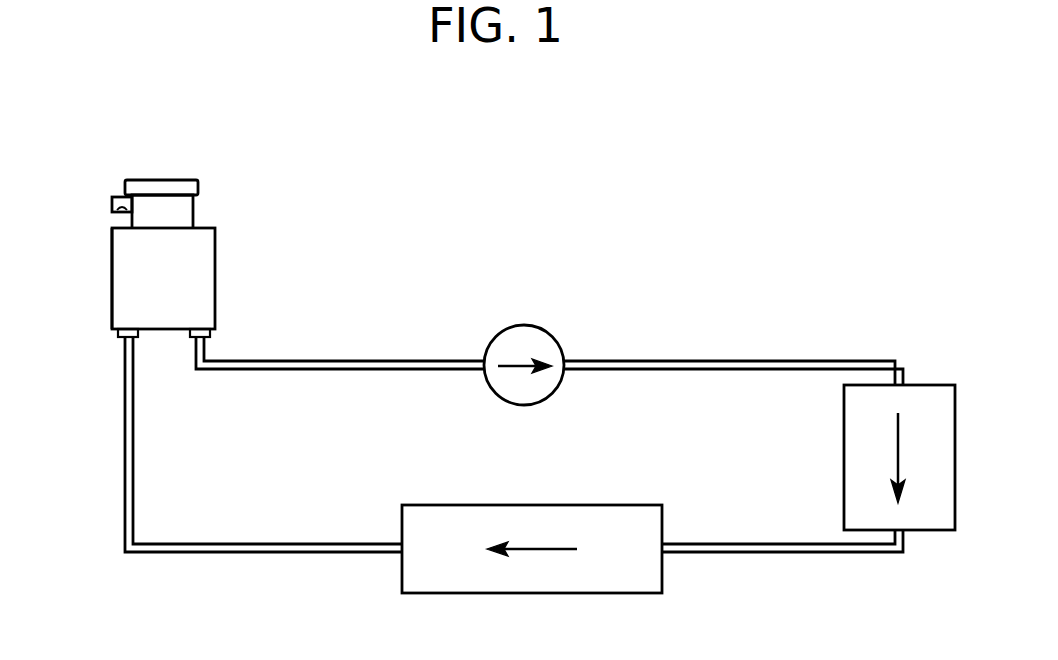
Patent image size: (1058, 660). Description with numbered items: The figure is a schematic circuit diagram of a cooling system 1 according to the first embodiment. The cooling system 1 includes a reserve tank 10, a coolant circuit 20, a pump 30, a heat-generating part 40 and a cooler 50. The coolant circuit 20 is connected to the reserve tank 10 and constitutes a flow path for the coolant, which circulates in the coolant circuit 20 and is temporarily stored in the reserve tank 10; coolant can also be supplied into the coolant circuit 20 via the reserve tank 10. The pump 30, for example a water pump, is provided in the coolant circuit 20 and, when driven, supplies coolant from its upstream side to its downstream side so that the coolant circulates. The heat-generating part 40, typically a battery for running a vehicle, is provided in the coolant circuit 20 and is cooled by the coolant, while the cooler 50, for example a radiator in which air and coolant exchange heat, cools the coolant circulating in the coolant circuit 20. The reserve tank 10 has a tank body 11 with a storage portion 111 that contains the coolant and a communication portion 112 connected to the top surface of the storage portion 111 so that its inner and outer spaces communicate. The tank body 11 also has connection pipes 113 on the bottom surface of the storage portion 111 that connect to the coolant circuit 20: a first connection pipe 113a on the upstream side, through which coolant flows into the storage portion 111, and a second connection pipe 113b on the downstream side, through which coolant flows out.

The cooling system 1 is at (918, 290).
The reserve tank 10 is at (227, 233).
The tank body 11 is at (215, 277).
The storage portion 111 is at (120, 282).
The communication portion 112 is at (158, 210).
The connection pipe 113 is at (205, 409).
The first connection pipe 113a is at (139, 335).
The second connection pipe 113b is at (210, 335).
The coolant circuit 20 is at (348, 360).
The pump 30 is at (522, 342).
The heat-generating part 40 is at (530, 580).
The cooler 50 is at (937, 467).